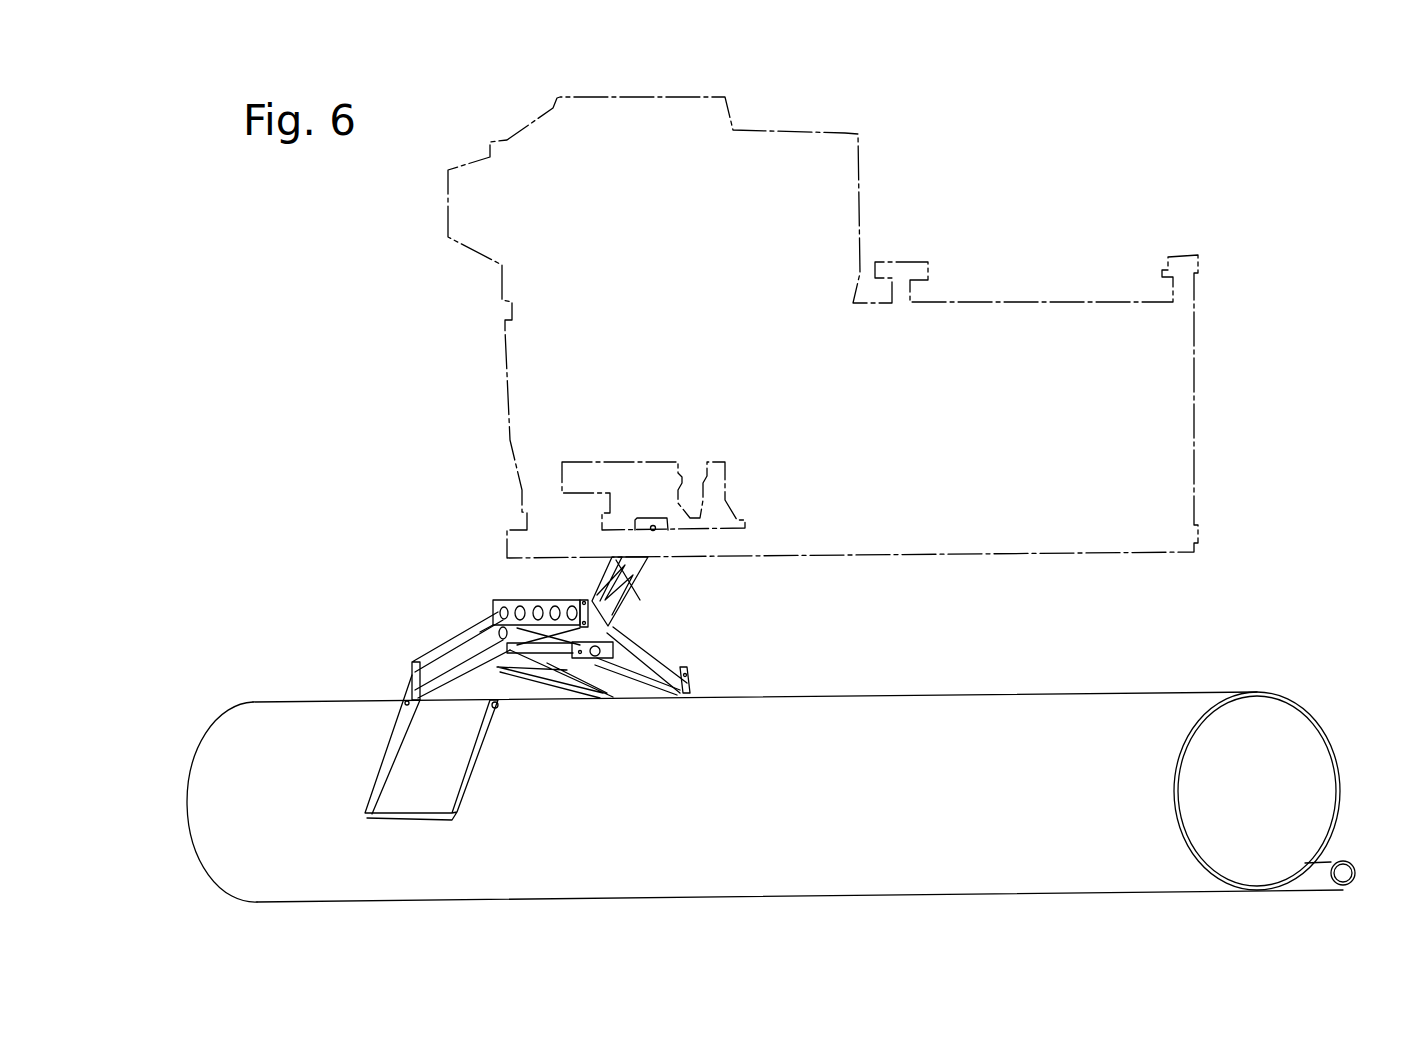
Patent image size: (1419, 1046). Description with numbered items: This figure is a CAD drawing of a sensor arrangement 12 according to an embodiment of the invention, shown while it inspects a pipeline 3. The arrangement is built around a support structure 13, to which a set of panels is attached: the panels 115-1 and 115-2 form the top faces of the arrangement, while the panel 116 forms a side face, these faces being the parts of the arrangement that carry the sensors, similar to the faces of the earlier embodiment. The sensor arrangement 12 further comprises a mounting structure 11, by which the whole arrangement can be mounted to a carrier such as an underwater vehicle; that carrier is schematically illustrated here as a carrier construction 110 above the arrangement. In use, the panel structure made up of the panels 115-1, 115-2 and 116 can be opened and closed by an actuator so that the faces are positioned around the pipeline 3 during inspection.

The carrier construction 110 is at (436, 369).
The sensor arrangement 12 is at (418, 596).
The support structure 13 is at (493, 618).
The mounting structure 11 is at (643, 590).
The panel 115-1 is at (460, 667).
The panel 115-2 is at (678, 662).
The panel 116 is at (393, 730).
The pipeline 3 is at (1020, 750).